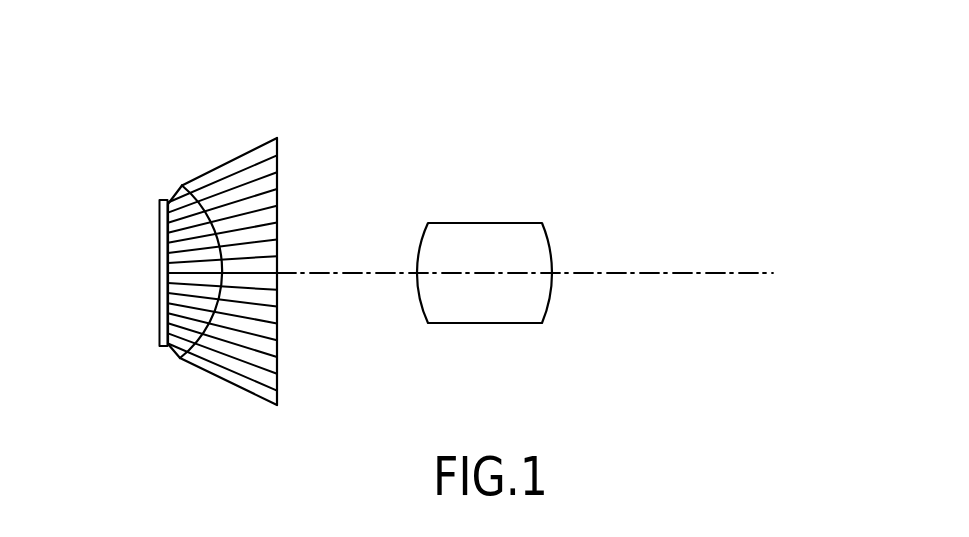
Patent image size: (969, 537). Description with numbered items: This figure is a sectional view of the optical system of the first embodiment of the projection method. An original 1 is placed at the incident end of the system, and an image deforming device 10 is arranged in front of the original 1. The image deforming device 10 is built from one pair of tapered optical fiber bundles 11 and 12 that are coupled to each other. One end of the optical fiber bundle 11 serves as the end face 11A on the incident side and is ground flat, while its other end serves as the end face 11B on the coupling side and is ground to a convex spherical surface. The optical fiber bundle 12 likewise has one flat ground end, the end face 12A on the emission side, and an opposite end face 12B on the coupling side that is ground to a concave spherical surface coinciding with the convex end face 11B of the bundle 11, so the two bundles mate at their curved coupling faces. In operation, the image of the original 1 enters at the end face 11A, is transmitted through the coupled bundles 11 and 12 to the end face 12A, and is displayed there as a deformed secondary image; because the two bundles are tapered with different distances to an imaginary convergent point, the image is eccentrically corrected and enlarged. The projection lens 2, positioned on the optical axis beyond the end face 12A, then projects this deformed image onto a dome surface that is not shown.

The original 1 is at (160, 337).
The projection lens 2 is at (522, 222).
The image deforming device 10 is at (213, 259).
The tapered optical fiber bundle 11 is at (183, 228).
The end face on the incident side 11A is at (170, 301).
The end face on the coupling side 11B is at (170, 210).
The tapered optical fiber bundle 12 is at (233, 172).
The end face on the emission side 12A is at (278, 348).
The end face on the coupling side 12B is at (207, 342).